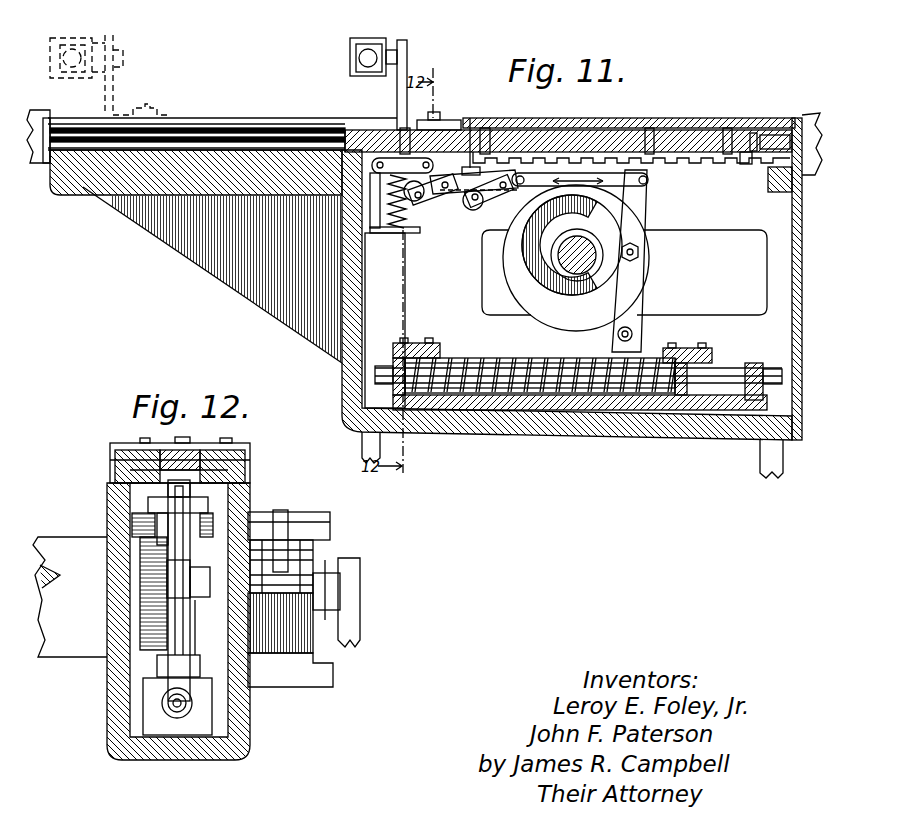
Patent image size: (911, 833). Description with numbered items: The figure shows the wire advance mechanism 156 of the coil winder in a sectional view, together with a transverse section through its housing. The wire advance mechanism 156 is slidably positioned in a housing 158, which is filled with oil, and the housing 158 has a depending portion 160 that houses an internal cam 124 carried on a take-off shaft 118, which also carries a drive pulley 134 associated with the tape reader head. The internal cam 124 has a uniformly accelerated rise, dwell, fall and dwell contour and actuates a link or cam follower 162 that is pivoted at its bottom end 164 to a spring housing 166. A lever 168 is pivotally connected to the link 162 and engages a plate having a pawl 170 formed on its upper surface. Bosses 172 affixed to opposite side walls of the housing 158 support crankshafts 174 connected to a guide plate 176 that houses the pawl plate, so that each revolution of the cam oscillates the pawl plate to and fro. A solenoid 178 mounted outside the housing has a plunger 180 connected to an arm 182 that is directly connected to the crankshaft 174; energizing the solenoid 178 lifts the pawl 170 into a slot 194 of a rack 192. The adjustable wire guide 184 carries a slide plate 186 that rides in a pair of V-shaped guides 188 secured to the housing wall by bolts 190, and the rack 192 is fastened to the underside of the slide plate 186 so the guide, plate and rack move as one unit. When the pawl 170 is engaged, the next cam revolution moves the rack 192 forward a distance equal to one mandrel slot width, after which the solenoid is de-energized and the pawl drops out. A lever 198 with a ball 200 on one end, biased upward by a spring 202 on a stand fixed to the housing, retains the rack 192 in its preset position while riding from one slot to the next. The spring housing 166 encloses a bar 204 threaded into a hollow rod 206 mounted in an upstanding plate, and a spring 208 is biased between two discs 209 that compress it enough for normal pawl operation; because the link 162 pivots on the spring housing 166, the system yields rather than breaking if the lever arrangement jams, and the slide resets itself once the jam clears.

In FIG. 11, the take-off shaft 118 is at (563, 270).
In FIG. 12, the take-off shaft 118 is at (199, 620).
In FIG. 11, the internal cam 124 is at (520, 273).
In FIG. 12, the internal cam 124 is at (147, 567).
In FIG. 12, the drive pulley 134 is at (360, 567).
In FIG. 11, the wire advance mechanism 156 is at (196, 87).
In FIG. 11, the housing 158 is at (85, 186).
In FIG. 11, the depending portion 160 is at (346, 322).
In FIG. 12, the depending portion 160 is at (107, 716).
In FIG. 11, the link or cam follower 162 is at (633, 213).
In FIG. 12, the link or cam follower 162 is at (180, 553).
In FIG. 11, the bottom end 164 is at (633, 334).
In FIG. 11, the spring housing 166 is at (548, 358).
In FIG. 12, the spring housing 166 is at (200, 708).
In FIG. 11, the lever 168 is at (539, 195).
In FIG. 11, the pawl 170 is at (470, 118).
In FIG. 12, the pawl 170 is at (173, 503).
In FIG. 11, the bosses 172 is at (476, 213).
In FIG. 12, the bosses 172 is at (137, 520).
In FIG. 11, the crankshafts 174 is at (432, 191).
In FIG. 12, the crankshafts 174 is at (207, 507).
In FIG. 12, the guide plate 176 is at (166, 515).
In FIG. 12, the solenoid 178 is at (290, 625).
In FIG. 12, the plunger 180 is at (290, 570).
In FIG. 12, the arm 182 is at (278, 510).
In FIG. 11, the adjustable wire guide 184 is at (366, 38).
In FIG. 11, the slide plate 186 is at (593, 140).
In FIG. 12, the slide plate 186 is at (143, 452).
In FIG. 11, the V-shaped guides 188 is at (207, 133).
In FIG. 12, the V-shaped guides 188 is at (130, 452).
In FIG. 12, the bolts 190 is at (113, 460).
In FIG. 11, the rack 192 is at (685, 153).
In FIG. 12, the rack 192 is at (170, 485).
In FIG. 11, the slot 194 is at (738, 167).
In FIG. 11, the lever 198 is at (368, 143).
In FIG. 11, the ball 200 is at (420, 147).
In FIG. 11, the spring 202 is at (392, 224).
In FIG. 11, the bar 204 is at (488, 393).
In FIG. 11, the hollow rod 206 is at (728, 386).
In FIG. 11, the spring 208 is at (497, 358).
In FIG. 11, the discs 209 is at (412, 345).